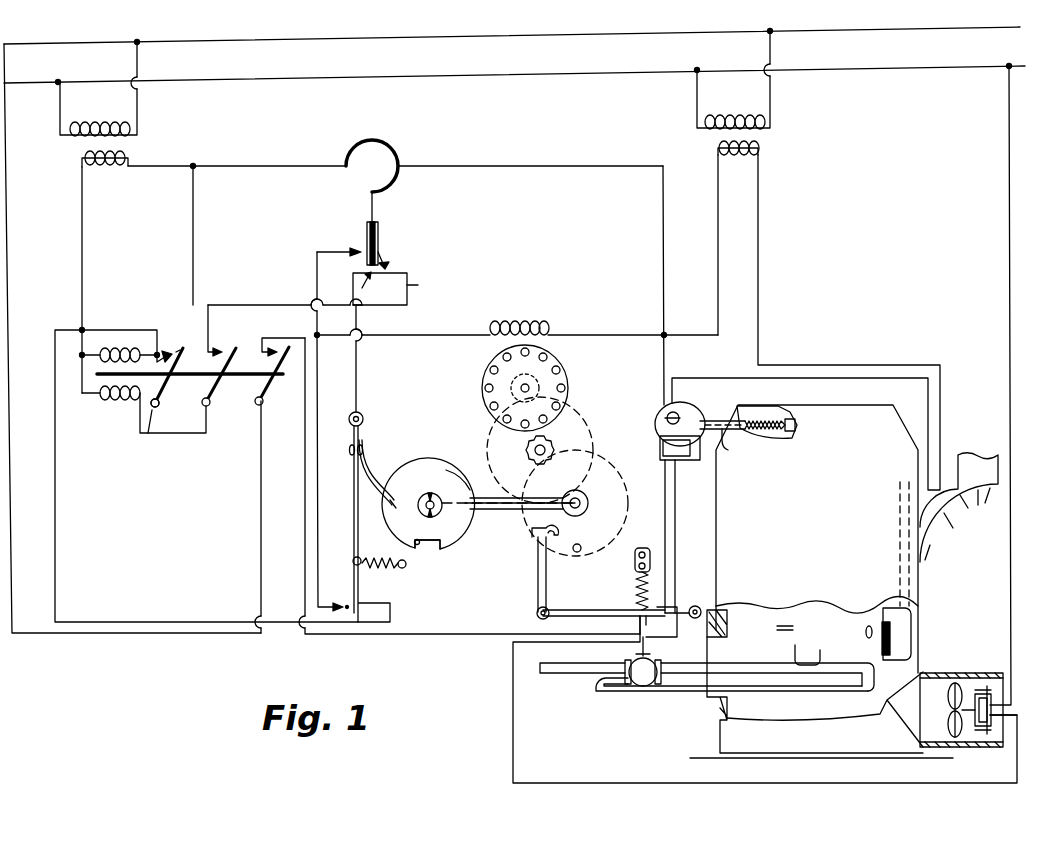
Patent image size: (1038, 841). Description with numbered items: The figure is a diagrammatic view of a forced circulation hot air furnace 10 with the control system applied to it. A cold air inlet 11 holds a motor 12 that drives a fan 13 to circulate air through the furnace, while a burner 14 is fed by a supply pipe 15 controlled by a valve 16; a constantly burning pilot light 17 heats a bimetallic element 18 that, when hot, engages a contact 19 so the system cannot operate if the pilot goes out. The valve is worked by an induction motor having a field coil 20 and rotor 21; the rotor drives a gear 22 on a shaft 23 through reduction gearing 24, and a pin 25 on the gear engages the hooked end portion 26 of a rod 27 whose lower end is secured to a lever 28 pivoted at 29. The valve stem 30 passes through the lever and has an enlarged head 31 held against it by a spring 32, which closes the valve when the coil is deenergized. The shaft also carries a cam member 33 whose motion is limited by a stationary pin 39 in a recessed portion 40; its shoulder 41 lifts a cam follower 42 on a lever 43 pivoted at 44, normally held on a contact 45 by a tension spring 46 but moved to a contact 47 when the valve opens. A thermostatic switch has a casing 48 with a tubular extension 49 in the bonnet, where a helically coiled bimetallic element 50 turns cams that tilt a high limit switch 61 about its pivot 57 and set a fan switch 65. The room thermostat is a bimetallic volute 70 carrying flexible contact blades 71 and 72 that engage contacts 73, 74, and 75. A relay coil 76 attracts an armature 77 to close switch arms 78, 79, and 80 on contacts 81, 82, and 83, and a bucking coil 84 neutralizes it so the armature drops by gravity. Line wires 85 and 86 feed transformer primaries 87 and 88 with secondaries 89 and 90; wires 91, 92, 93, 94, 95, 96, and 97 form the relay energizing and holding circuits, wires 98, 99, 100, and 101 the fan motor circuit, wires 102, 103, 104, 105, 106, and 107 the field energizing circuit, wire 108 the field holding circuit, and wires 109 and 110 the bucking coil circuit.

The hot air furnace 10 is at (750, 534).
The cold air inlet 11 is at (952, 680).
The motor 12 is at (996, 688).
The fan 13 is at (962, 678).
The burner 14 is at (790, 640).
The supply pipe 15 is at (548, 672).
The valve 16 is at (644, 686).
The pilot light 17 is at (866, 628).
The bimetallic element 18 is at (872, 600).
The contact 19 is at (890, 608).
The field coil 20 is at (530, 322).
The rotor 21 is at (556, 366).
The gear 22 is at (606, 466).
The shaft 23 is at (486, 512).
The reduction gearing 24 is at (588, 414).
The pin 25 is at (576, 552).
The hooked end portion 26 is at (530, 534).
The rod 27 is at (537, 590).
The lever 28 is at (570, 603).
The pivot 29 is at (695, 606).
The valve stem 30 is at (648, 644).
The enlarged head 31 is at (638, 604).
The spring 32 is at (636, 580).
The cam member 33 is at (428, 466).
The stationary pin 39 is at (418, 548).
The recessed portion 40 is at (437, 548).
The shoulder 41 is at (388, 522).
The cam follower 42 is at (374, 486).
The lever 43 is at (362, 432).
The pivot 44 is at (360, 412).
The contact 45 is at (360, 606).
The tension spring 46 is at (394, 570).
The contact 47 is at (343, 602).
The casing 48 is at (706, 410).
The tubular extension 49 is at (727, 452).
The helically coiled bimetallic element 50 is at (760, 410).
The pivot 57 is at (797, 425).
The high limit switch 61 is at (680, 412).
The fan switch 65 is at (668, 464).
The bimetallic volute 70 is at (380, 150).
The flexible contact blade 71 is at (380, 252).
The flexible contact blade 72 is at (364, 245).
The contact 73 is at (364, 282).
The contact 74 is at (360, 256).
The contact 75 is at (386, 268).
The coil 76 is at (112, 348).
The armature 77 is at (150, 406).
The switch arm 78 is at (288, 364).
The switch arm 79 is at (232, 364).
The switch arm 80 is at (186, 362).
The contact 81 is at (280, 340).
The contact 82 is at (222, 350).
The contact 83 is at (183, 338).
The bucking coil 84 is at (112, 400).
The line wire 85 is at (318, 38).
The line wire 86 is at (420, 58).
The transformer primary 87 is at (84, 118).
The transformer primary 88 is at (718, 112).
The low voltage secondary 89 is at (90, 168).
The low voltage secondary 90 is at (724, 162).
The wire 91 is at (142, 166).
The wire 92 is at (246, 166).
The wire 93 is at (356, 366).
The wire 94 is at (120, 622).
The wire 95 is at (82, 262).
The wire 96 is at (194, 248).
The wire 97 is at (160, 345).
The wire 98 is at (6, 288).
The wire 99 is at (304, 486).
The wire 100 is at (514, 740).
The wire 101 is at (1009, 324).
The wire 102 is at (760, 264).
The wire 103 is at (927, 390).
The wire 104 is at (660, 228).
The wire 105 is at (314, 278).
The wire 106 is at (420, 335).
The wire 107 is at (716, 246).
The wire 108 is at (320, 404).
The wire 109 is at (431, 283).
The wire 110 is at (188, 434).